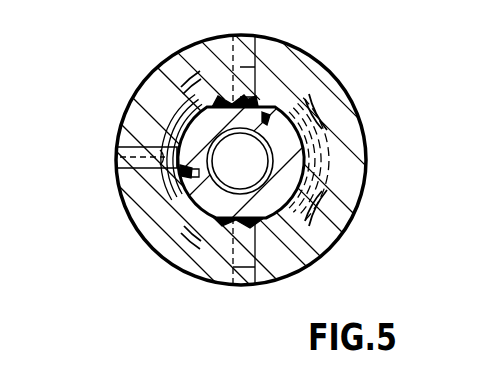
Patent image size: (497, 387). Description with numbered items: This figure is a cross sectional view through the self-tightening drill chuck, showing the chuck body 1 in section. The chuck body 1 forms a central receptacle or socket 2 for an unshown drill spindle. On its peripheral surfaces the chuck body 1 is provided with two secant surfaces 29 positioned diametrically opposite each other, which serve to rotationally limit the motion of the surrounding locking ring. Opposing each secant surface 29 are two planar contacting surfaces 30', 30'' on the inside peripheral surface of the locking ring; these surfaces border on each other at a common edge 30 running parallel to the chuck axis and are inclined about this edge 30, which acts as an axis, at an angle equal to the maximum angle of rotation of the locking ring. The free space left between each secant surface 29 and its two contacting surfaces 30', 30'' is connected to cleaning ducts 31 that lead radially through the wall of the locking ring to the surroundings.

The chuck body 1 is at (165, 108).
The receptacle or socket 2 is at (248, 163).
The secant surfaces 29 is at (210, 100).
The common edge 30 is at (247, 141).
The planar contacting surface 30' is at (235, 166).
The planar contacting surface 30'' is at (244, 195).
The cleaning ducts 31 is at (258, 32).